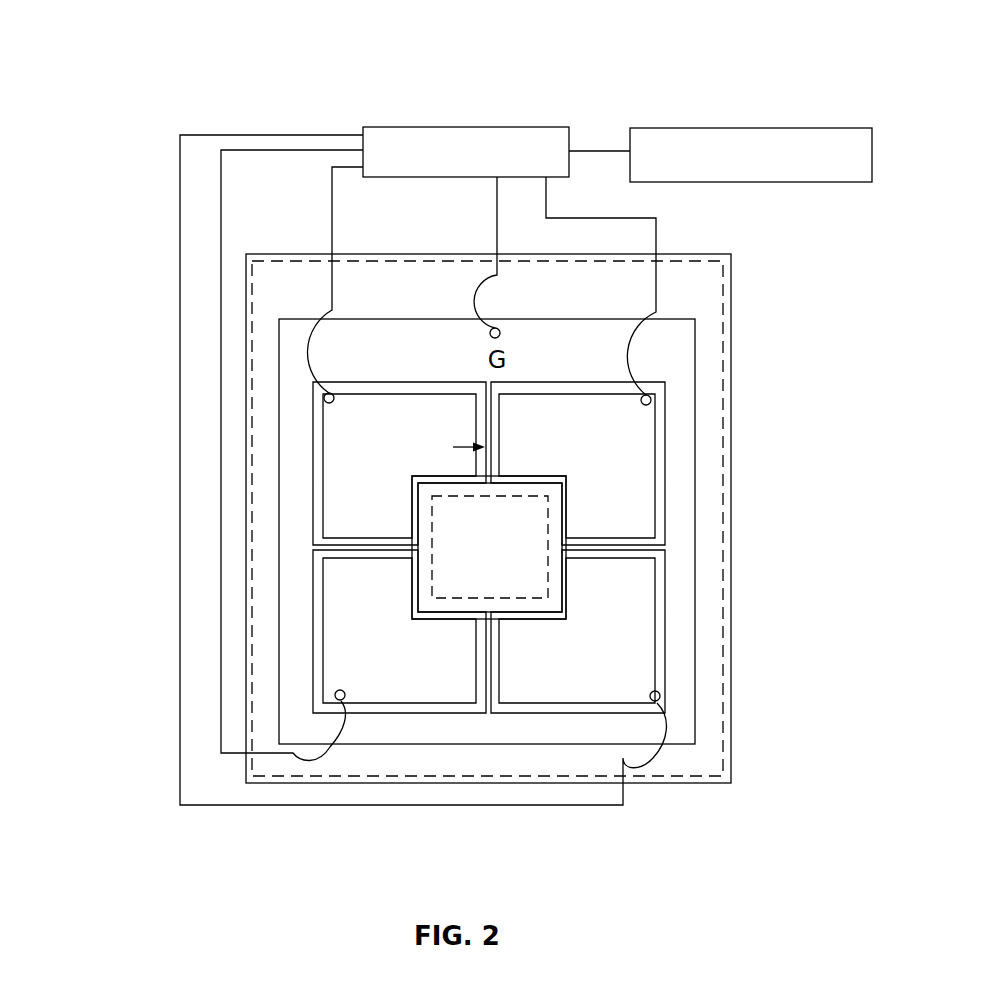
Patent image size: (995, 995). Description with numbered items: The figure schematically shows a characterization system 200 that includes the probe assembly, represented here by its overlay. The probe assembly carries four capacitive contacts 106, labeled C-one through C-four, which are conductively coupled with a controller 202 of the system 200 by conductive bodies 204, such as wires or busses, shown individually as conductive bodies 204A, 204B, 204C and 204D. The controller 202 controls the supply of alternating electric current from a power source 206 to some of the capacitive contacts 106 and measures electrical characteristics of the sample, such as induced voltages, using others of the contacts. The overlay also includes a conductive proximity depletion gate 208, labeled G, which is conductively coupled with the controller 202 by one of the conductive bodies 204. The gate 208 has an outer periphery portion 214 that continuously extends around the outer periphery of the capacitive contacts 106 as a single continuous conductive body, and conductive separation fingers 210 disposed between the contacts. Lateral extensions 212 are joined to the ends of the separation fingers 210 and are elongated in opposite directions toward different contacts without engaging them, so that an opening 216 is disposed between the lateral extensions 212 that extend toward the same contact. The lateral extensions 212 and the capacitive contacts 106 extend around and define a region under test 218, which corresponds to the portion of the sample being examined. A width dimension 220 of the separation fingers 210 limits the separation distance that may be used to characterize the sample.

The characterization system 200 is at (138, 46).
The controller 202 is at (414, 127).
The conductive bodies 204 is at (342, 234).
The conductive body 204A is at (330, 182).
The conductive body 204B is at (318, 148).
The conductive body 204C is at (580, 806).
The conductive body 204D is at (657, 243).
The power source 206 is at (670, 128).
The conductive proximity depletion gate 208 is at (697, 315).
The separation fingers 210 is at (634, 558).
The lateral extensions 212 is at (573, 518).
The outer periphery portion 214 is at (682, 346).
The opening 216 is at (556, 488).
The region under test 218 is at (465, 557).
The width dimension 220 is at (502, 447).
The capacitive contacts 106 is at (642, 630).